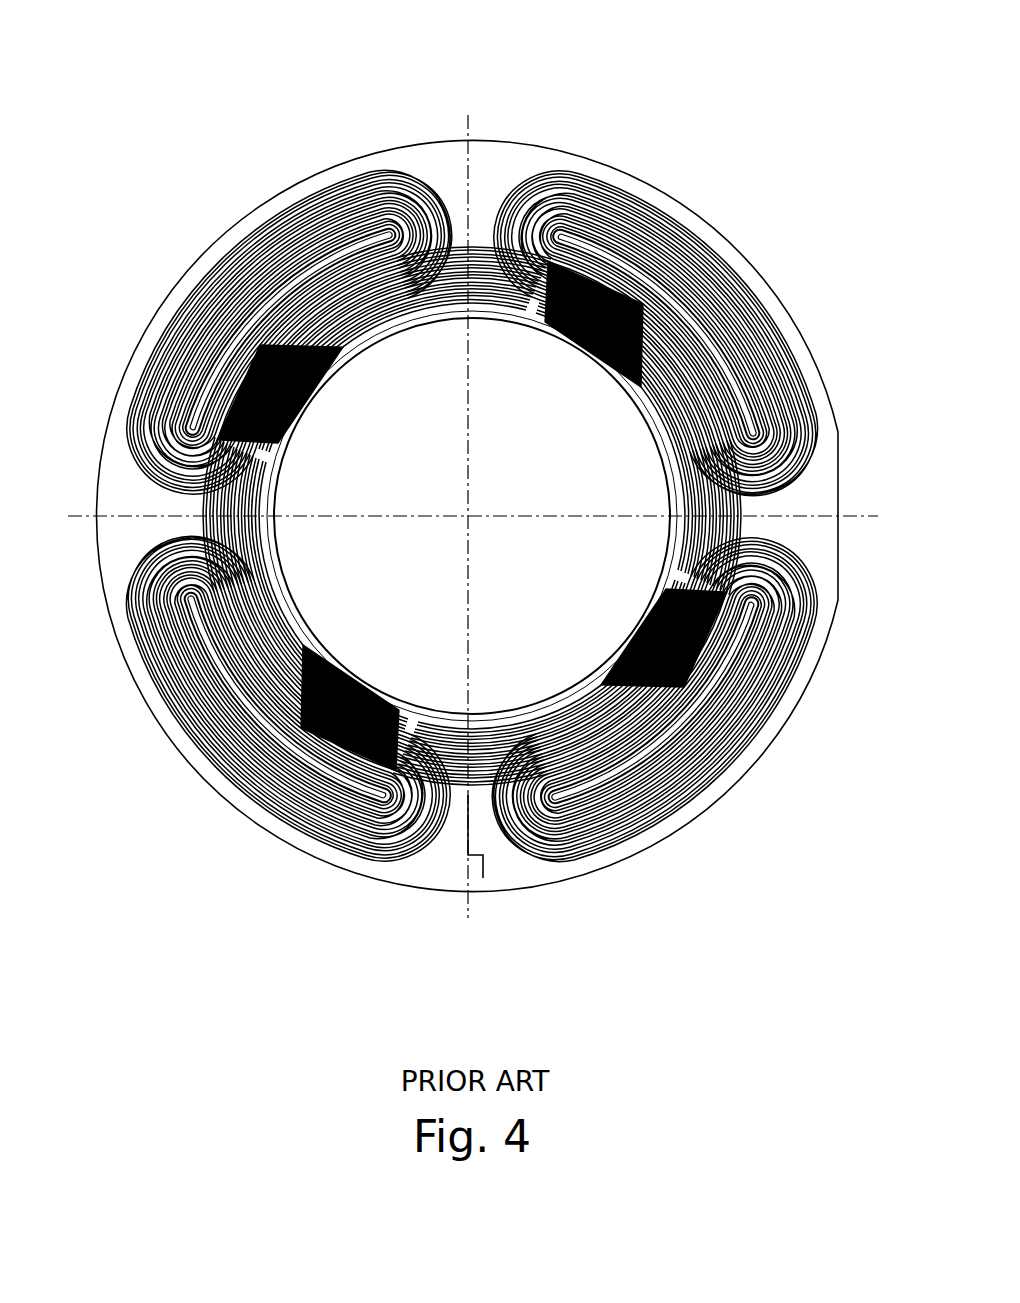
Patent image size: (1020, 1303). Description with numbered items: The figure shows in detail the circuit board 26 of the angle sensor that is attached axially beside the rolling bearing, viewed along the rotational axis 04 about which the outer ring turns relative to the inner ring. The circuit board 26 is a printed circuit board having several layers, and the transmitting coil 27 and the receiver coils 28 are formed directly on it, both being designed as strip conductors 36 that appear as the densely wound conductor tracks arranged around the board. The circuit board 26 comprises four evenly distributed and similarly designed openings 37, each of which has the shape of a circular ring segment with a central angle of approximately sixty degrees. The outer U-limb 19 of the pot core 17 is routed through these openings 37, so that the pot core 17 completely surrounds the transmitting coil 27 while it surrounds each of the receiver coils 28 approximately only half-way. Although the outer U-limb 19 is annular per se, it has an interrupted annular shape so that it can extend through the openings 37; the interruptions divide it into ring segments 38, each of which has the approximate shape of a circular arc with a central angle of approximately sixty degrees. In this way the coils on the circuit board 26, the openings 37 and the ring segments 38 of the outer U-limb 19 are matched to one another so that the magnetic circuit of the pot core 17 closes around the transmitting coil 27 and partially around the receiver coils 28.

The rotational axis 04 is at (470, 518).
The pot core 17 is at (600, 256).
The outer U-limb 19 is at (657, 267).
The circuit board 26 is at (228, 233).
The transmitting coil 27 is at (474, 246).
The receiver coils 28 is at (662, 232).
The strip conductors 36 is at (190, 740).
The openings 37 is at (240, 322).
The ring segments 38 is at (325, 250).